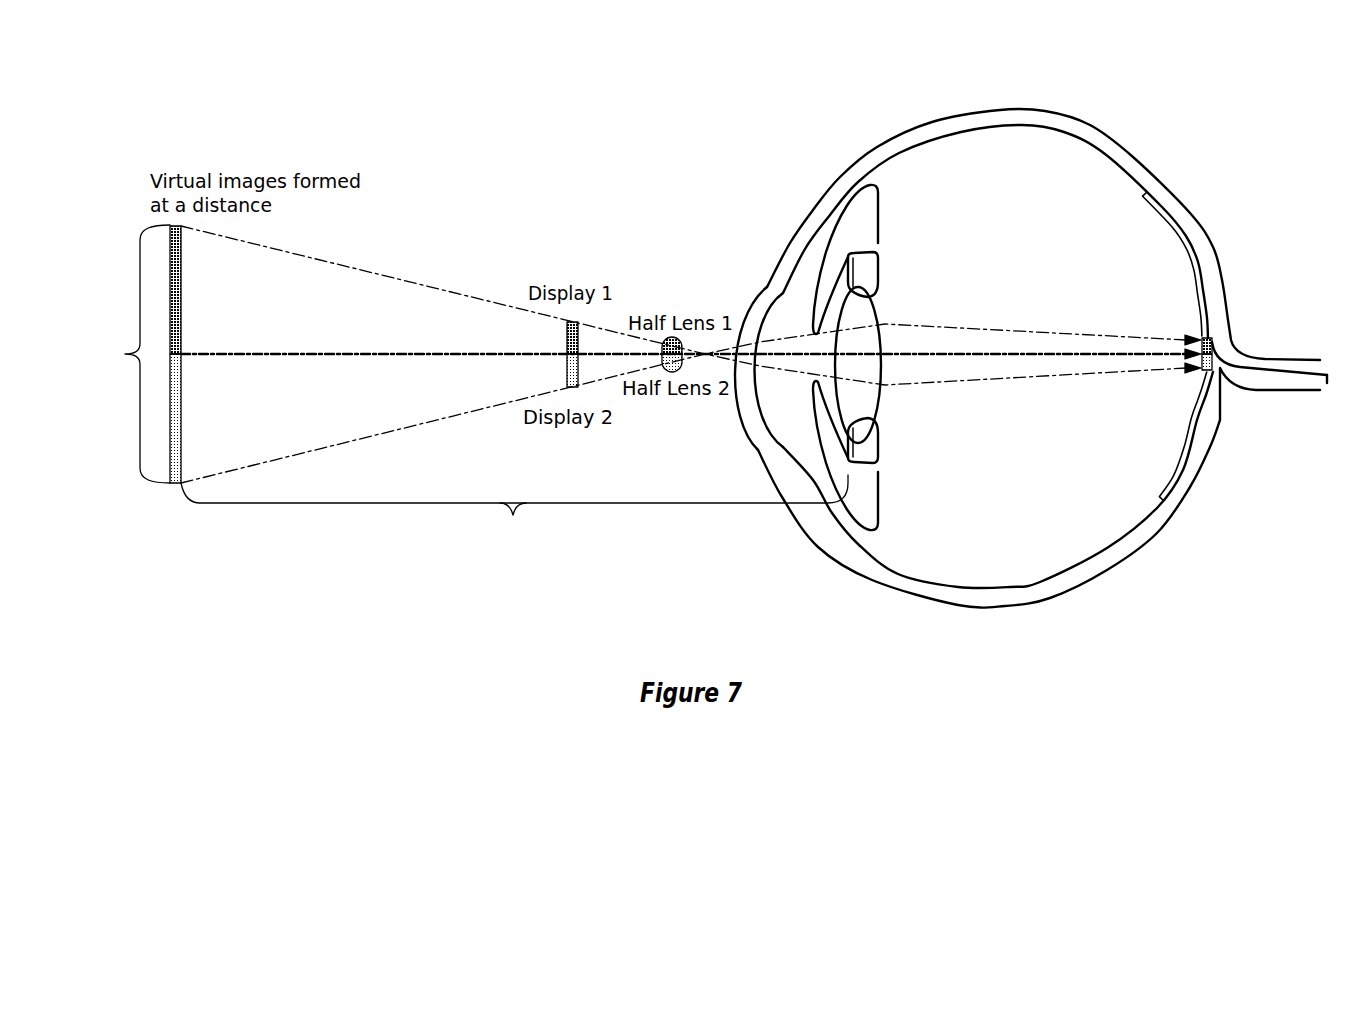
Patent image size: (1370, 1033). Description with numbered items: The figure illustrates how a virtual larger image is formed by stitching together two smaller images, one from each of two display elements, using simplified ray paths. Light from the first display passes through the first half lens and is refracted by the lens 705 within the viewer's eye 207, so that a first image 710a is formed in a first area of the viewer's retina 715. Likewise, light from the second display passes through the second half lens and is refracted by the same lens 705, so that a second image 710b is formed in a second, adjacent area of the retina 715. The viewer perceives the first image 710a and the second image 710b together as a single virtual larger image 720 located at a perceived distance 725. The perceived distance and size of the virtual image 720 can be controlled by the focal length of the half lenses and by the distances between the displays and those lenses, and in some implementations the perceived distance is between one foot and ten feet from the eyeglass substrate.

The viewer's eye 207 is at (969, 108).
The lens 705 is at (877, 318).
The first image 710a is at (183, 313).
The second image 710b is at (183, 442).
The retina 715 is at (1177, 223).
The virtual larger image 720 is at (125, 354).
The perceived distance 725 is at (514, 508).